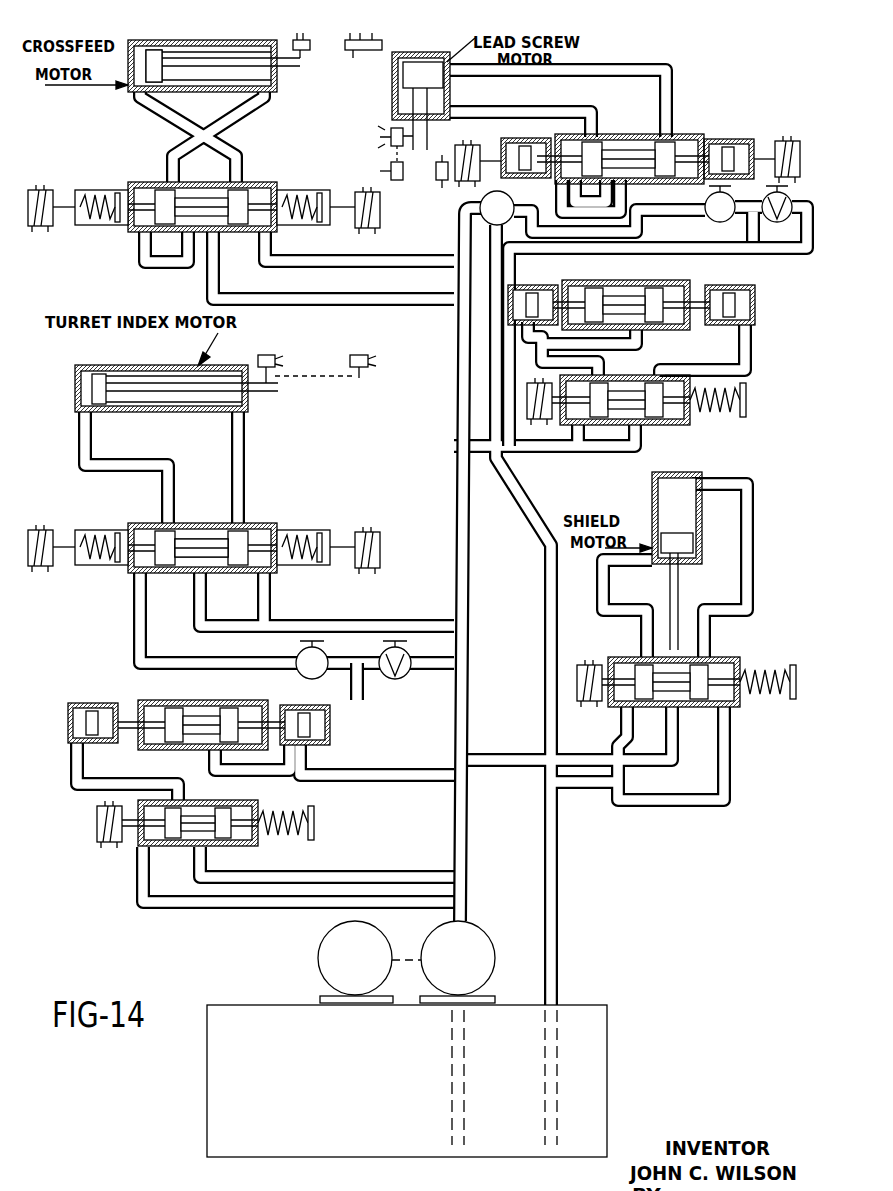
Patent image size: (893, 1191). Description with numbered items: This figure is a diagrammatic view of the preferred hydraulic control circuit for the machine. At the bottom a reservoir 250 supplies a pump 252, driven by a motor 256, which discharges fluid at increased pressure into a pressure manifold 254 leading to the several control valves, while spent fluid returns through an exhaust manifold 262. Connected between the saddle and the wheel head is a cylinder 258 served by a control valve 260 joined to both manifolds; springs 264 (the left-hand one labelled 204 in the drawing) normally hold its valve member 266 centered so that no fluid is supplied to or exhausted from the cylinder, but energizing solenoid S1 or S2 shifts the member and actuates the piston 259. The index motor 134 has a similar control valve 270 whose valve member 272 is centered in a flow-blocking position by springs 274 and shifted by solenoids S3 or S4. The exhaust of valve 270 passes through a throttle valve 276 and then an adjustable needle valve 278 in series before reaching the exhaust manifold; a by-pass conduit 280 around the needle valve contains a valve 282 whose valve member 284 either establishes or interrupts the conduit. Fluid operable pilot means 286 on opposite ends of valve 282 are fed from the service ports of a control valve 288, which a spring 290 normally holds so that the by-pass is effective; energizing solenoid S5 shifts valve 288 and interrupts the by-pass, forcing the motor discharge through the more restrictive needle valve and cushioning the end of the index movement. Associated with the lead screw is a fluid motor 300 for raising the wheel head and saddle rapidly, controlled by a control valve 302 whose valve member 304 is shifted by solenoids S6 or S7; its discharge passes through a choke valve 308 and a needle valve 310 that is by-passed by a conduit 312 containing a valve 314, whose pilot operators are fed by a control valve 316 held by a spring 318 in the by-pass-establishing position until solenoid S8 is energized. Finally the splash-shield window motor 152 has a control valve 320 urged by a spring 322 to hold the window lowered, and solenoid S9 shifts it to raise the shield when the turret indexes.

The cylinder 258 is at (236, 40).
The piston 259 is at (131, 49).
The control valve 260 is at (245, 184).
The valve return spring 204 is at (90, 190).
The springs 264 is at (316, 193).
The valve member 266 is at (145, 236).
The exhaust manifold 262 is at (398, 259).
The fluid motor 300 is at (405, 62).
The valve member 304 is at (622, 150).
The control valve 302 is at (680, 139).
The flow control valve 308 is at (710, 220).
The needle valve 310 is at (774, 215).
The conduit 312 is at (748, 262).
The valve 314 is at (586, 282).
The control valve 316 is at (690, 387).
The spring 318 is at (727, 414).
The index motor 134 is at (136, 365).
The motor 152 is at (652, 520).
The control valve 270 is at (245, 525).
The valve member 272 is at (206, 522).
The springs 274 is at (92, 530).
The throttle valve 276 is at (324, 652).
The adjustable needle valve 278 is at (397, 680).
The conduit 280 is at (355, 681).
The valve 282 is at (155, 700).
The valve member 284 is at (212, 716).
The fluid operable pilot means 286 is at (68, 722).
The control valve 288 is at (258, 848).
The spring 290 is at (292, 820).
The control valve 320 is at (718, 660).
The spring 322 is at (757, 700).
The pressure manifold 254 is at (466, 829).
The motor 256 is at (322, 955).
The pump 252 is at (495, 968).
The reservoir 250 is at (256, 1005).